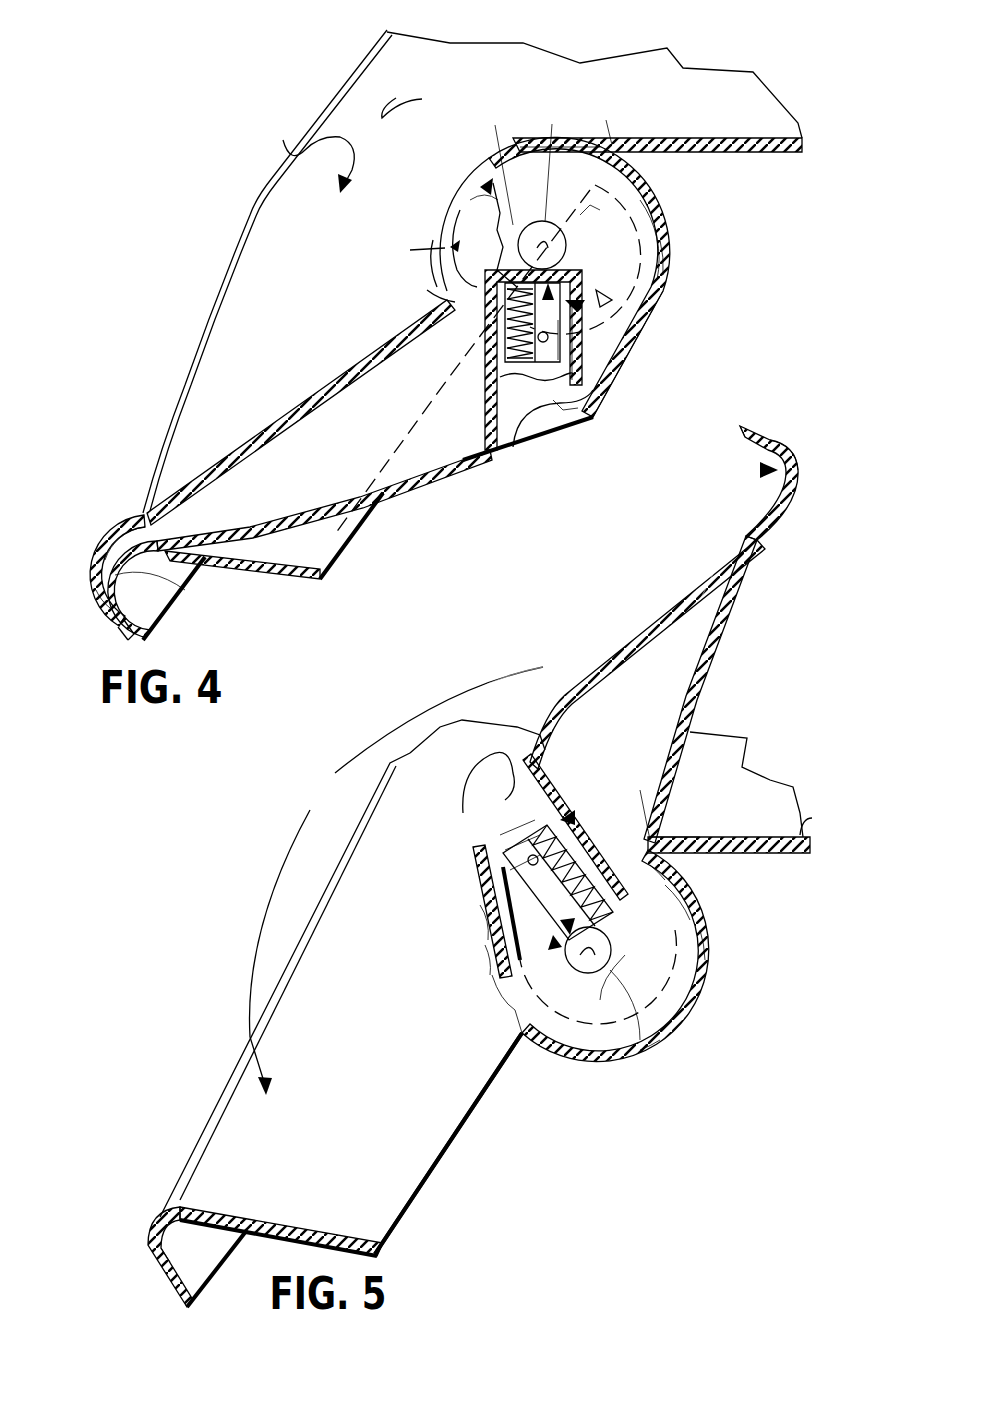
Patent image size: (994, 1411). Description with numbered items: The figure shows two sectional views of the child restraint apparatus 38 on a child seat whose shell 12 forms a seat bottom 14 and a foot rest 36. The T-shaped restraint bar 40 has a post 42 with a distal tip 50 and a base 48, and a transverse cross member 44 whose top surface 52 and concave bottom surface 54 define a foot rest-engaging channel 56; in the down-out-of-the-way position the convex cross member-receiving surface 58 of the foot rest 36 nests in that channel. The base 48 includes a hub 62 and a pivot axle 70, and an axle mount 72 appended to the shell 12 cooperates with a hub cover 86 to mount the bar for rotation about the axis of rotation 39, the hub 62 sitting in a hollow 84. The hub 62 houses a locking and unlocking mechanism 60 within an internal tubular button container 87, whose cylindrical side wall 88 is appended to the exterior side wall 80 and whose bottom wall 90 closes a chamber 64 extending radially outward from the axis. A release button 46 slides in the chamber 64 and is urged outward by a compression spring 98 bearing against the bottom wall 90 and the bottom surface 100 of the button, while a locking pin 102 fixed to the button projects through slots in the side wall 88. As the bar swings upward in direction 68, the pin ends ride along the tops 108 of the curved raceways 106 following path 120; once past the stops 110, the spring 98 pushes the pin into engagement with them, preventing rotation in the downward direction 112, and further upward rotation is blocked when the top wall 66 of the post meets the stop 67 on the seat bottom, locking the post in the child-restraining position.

In FIG. 4, the shell 12 is at (485, 32).
In FIG. 5, the shell 12 is at (770, 778).
In FIG. 4, the seat bottom 14 is at (738, 137).
In FIG. 5, the seat bottom 14 is at (800, 830).
In FIG. 4, the foot rest 36 is at (160, 585).
In FIG. 5, the foot rest 36 is at (157, 1227).
In FIG. 4, the child restraint apparatus 38 is at (745, 196).
In FIG. 5, the child restraint apparatus 38 is at (672, 1088).
In FIG. 4, the axis of rotation 39 is at (537, 240).
In FIG. 5, the axis of rotation 39 is at (600, 935).
In FIG. 4, the T-shaped restraint bar 40 is at (397, 495).
In FIG. 5, the T-shaped restraint bar 40 is at (675, 572).
In FIG. 4, the post 42 is at (445, 478).
In FIG. 5, the post 42 is at (600, 640).
In FIG. 4, the transverse cross member 44 is at (115, 545).
In FIG. 5, the transverse cross member 44 is at (775, 437).
In FIG. 4, the release button 46 is at (545, 420).
In FIG. 5, the release button 46 is at (490, 797).
In FIG. 4, the base 48 is at (645, 315).
In FIG. 5, the base 48 is at (498, 1018).
In FIG. 4, the distal tip 50 is at (135, 510).
In FIG. 5, the distal tip 50 is at (790, 528).
In FIG. 4, the top surface 52 is at (112, 628).
In FIG. 5, the top surface 52 is at (800, 465).
In FIG. 4, the concave bottom surface 54 is at (122, 634).
In FIG. 5, the concave bottom surface 54 is at (745, 438).
In FIG. 5, the foot rest-engaging channel 56 is at (760, 470).
In FIG. 4, the convex cross member-receiving surface 58 is at (95, 590).
In FIG. 5, the convex cross member-receiving surface 58 is at (152, 1257).
In FIG. 4, the locking and unlocking mechanism 60 is at (565, 268).
In FIG. 5, the locking and unlocking mechanism 60 is at (565, 985).
In FIG. 4, the hub 62 is at (425, 295).
In FIG. 5, the hub 62 is at (480, 960).
In FIG. 4, the chamber 64 is at (548, 235).
In FIG. 5, the chamber 64 is at (600, 1000).
In FIG. 4, the top wall 66 is at (235, 464).
In FIG. 5, the top wall 66 is at (665, 840).
In FIG. 4, the stop 67 is at (607, 116).
In FIG. 5, the stop 67 is at (635, 800).
In FIG. 4, the upward direction 68 is at (433, 98).
In FIG. 5, the upward direction 68 is at (420, 712).
In FIG. 4, the pivot axle 70 is at (555, 160).
In FIG. 5, the pivot axle 70 is at (665, 1035).
In FIG. 4, the axle mount 72 is at (640, 160).
In FIG. 5, the axle mount 72 is at (690, 882).
In FIG. 4, the exterior side wall 80 is at (672, 244).
In FIG. 5, the exterior side wall 80 is at (712, 930).
In FIG. 4, the hollow 84 is at (412, 252).
In FIG. 4, the hub cover 86 is at (662, 214).
In FIG. 5, the hub cover 86 is at (700, 905).
In FIG. 4, the tubular button container 87 is at (676, 272).
In FIG. 5, the tubular button container 87 is at (578, 808).
In FIG. 4, the cylindrical side wall 88 is at (600, 392).
In FIG. 5, the cylindrical side wall 88 is at (540, 762).
In FIG. 4, the bottom wall 90 is at (495, 160).
In FIG. 5, the bottom wall 90 is at (640, 1045).
In FIG. 4, the compression spring 98 is at (452, 370).
In FIG. 5, the compression spring 98 is at (600, 850).
In FIG. 4, the bottom surface 100 is at (580, 348).
In FIG. 5, the bottom surface 100 is at (495, 838).
In FIG. 4, the locking pin 102 is at (590, 335).
In FIG. 5, the locking pin 102 is at (500, 855).
In FIG. 4, the curved raceways 106 is at (428, 250).
In FIG. 5, the curved raceways 106 is at (475, 925).
In FIG. 4, the tops 108 is at (430, 218).
In FIG. 5, the tops 108 is at (490, 985).
In FIG. 4, the stops 110 is at (475, 165).
In FIG. 5, the stops 110 is at (505, 878).
In FIG. 4, the downward direction 112 is at (304, 151).
In FIG. 5, the downward direction 112 is at (260, 927).
In FIG. 4, the path 120 is at (470, 180).